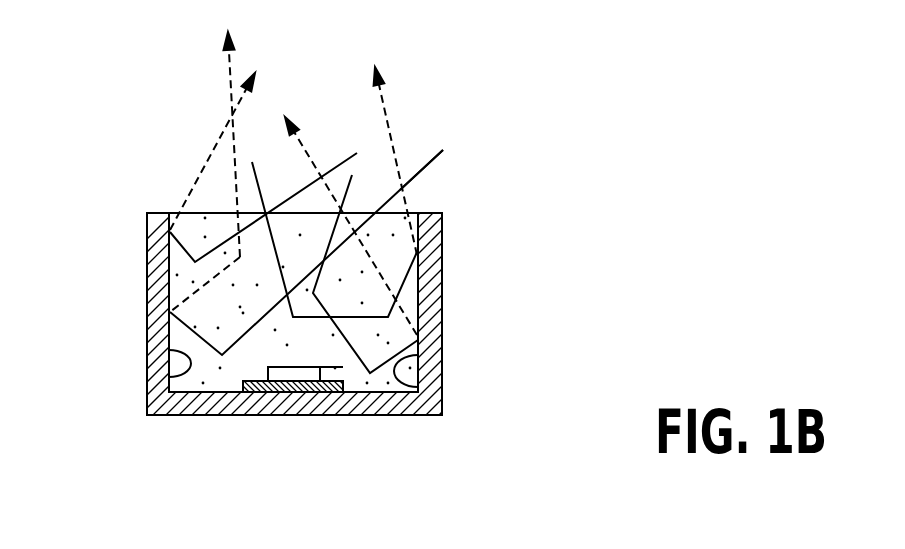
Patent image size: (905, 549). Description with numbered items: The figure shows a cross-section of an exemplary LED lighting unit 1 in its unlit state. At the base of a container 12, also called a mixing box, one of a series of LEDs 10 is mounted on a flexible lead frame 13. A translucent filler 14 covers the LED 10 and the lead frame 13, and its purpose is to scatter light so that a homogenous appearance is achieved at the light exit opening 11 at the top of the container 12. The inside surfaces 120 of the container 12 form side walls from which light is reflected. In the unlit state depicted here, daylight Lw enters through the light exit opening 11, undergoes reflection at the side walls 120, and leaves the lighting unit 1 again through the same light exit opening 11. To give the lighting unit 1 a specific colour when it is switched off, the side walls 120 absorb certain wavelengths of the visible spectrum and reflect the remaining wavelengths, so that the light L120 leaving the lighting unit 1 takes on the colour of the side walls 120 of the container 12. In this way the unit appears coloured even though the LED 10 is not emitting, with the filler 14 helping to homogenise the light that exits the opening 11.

The LED lighting unit 1 is at (98, 225).
The LED 10 is at (278, 372).
The light exit opening 11 is at (203, 213).
The container 12 is at (442, 317).
The inside surfaces 120 is at (192, 372).
The flexible lead frame 13 is at (310, 383).
The translucent filler 14 is at (345, 363).
The light of specific colour L120 is at (383, 102).
The daylight Lw is at (437, 157).